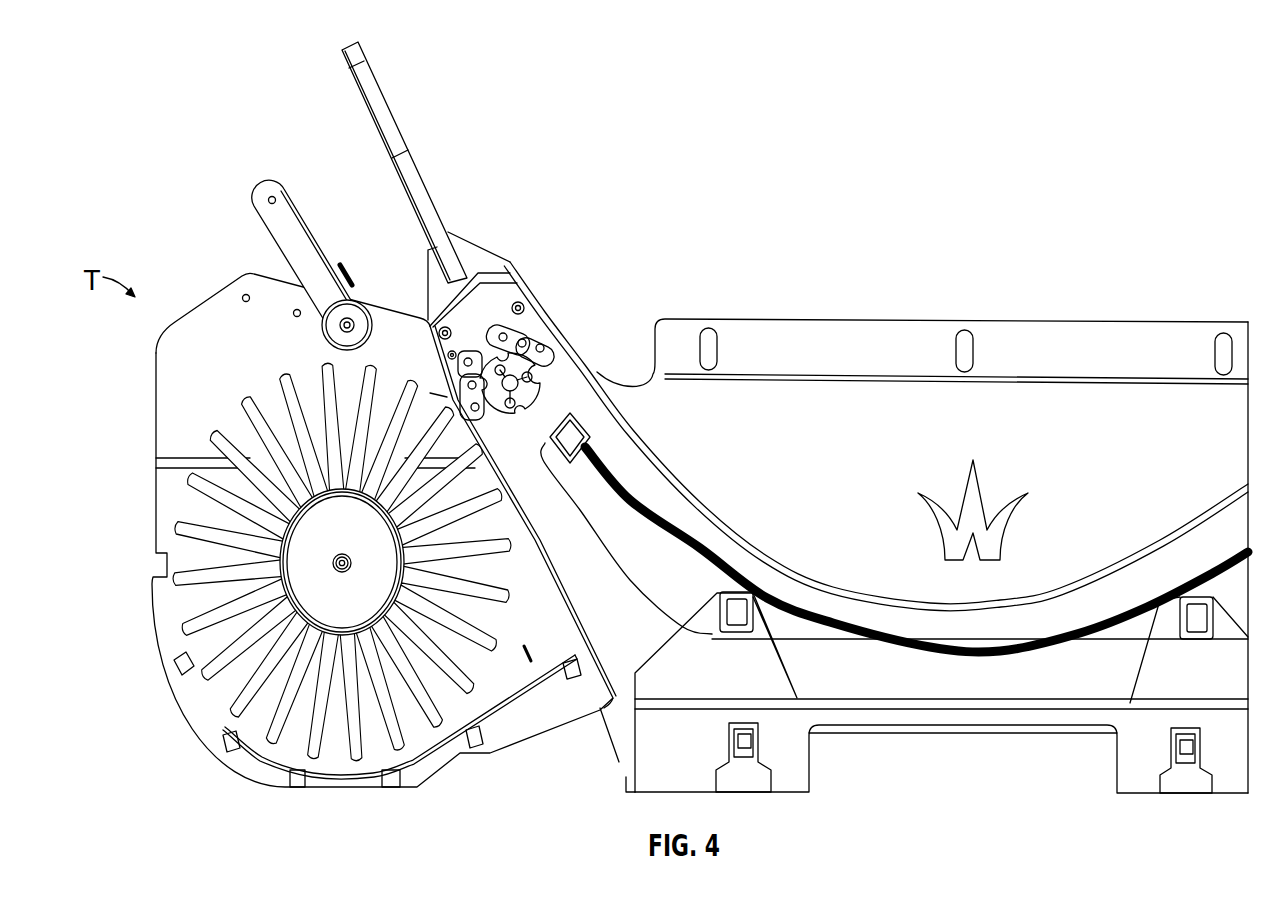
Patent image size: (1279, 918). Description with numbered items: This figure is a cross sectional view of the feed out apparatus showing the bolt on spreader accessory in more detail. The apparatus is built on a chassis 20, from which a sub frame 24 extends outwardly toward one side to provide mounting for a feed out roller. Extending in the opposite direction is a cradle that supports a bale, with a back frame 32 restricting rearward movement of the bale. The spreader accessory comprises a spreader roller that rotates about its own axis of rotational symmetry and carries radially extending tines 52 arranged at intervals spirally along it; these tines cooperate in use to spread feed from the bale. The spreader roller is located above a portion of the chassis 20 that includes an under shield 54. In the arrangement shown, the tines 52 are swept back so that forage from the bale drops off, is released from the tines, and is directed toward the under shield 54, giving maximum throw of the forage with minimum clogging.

The chassis 20 is at (657, 742).
The sub frame 24 is at (371, 80).
The back frame 32 is at (770, 418).
The tines 52 is at (253, 412).
The under shield 54 is at (417, 773).